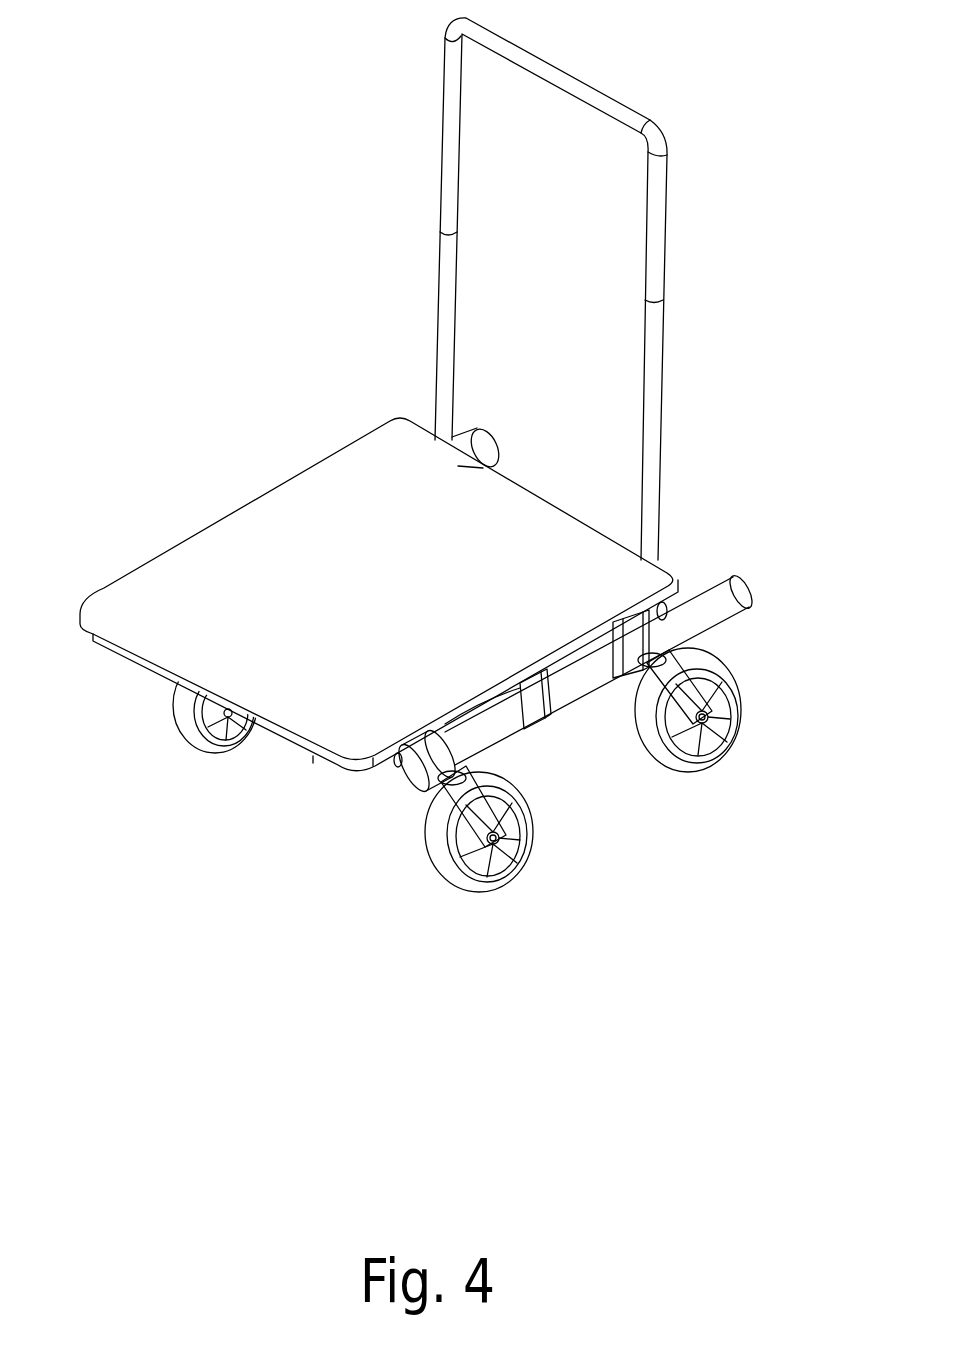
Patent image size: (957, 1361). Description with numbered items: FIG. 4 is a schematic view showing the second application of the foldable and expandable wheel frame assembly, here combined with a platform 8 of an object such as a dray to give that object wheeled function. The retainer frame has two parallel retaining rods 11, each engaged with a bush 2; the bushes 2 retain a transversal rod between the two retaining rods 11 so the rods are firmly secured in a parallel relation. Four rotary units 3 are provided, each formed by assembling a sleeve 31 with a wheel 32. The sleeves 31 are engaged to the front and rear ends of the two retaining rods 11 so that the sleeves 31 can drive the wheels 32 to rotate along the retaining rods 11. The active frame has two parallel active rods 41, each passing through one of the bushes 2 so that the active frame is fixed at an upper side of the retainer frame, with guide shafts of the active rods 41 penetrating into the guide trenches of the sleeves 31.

The platform 8 is at (293, 548).
The retaining rod 11 is at (580, 678).
The bush 2 is at (535, 703).
The active rod 41 is at (603, 627).
The rotary unit 3 is at (445, 917).
The sleeve 31 is at (530, 812).
The wheel 32 is at (457, 880).